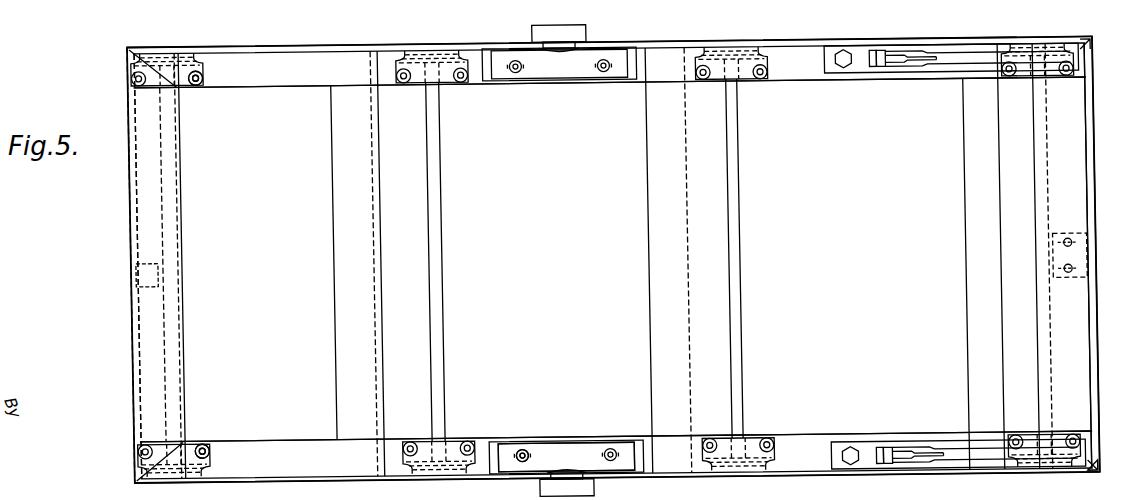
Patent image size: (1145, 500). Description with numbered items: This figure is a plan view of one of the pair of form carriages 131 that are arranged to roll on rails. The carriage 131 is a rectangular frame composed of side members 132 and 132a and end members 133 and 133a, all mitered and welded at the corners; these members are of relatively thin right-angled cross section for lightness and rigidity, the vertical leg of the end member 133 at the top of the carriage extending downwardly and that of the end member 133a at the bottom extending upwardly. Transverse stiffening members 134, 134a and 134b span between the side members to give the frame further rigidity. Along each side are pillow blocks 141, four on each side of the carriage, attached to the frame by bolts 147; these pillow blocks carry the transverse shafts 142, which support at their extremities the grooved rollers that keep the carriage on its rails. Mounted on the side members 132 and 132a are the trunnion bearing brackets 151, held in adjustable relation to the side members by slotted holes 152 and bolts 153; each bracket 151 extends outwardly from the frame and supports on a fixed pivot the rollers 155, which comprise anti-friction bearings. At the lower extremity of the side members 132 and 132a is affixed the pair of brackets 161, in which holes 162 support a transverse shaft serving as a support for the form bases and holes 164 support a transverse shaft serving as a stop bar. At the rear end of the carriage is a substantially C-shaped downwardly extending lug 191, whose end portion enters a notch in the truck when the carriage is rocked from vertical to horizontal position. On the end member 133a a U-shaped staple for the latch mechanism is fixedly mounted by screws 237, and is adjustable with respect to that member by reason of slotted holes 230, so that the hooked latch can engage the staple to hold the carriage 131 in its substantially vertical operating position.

The form carriage 131 is at (118, 50).
The side member 132 is at (264, 100).
The side member 132a is at (250, 440).
The end member 133 is at (128, 341).
The end member 133a is at (1093, 305).
The transverse stiffening member 134 is at (381, 356).
The transverse stiffening member 134a is at (656, 357).
The transverse stiffening member 134b is at (982, 338).
The pillow block 141 is at (194, 90).
The transverse shaft 142 is at (446, 271).
The bolt 147 is at (204, 77).
The trunnion bearing bracket 151 is at (543, 88).
The slotted hole 152 is at (540, 453).
The bolt 153 is at (529, 451).
The roller 155 is at (578, 32).
The bracket 161 is at (868, 90).
The hole 162 is at (1093, 480).
The hole 164 is at (968, 466).
The lug 191 is at (142, 277).
The slotted hole 230 is at (1075, 262).
The screw 237 is at (1070, 240).